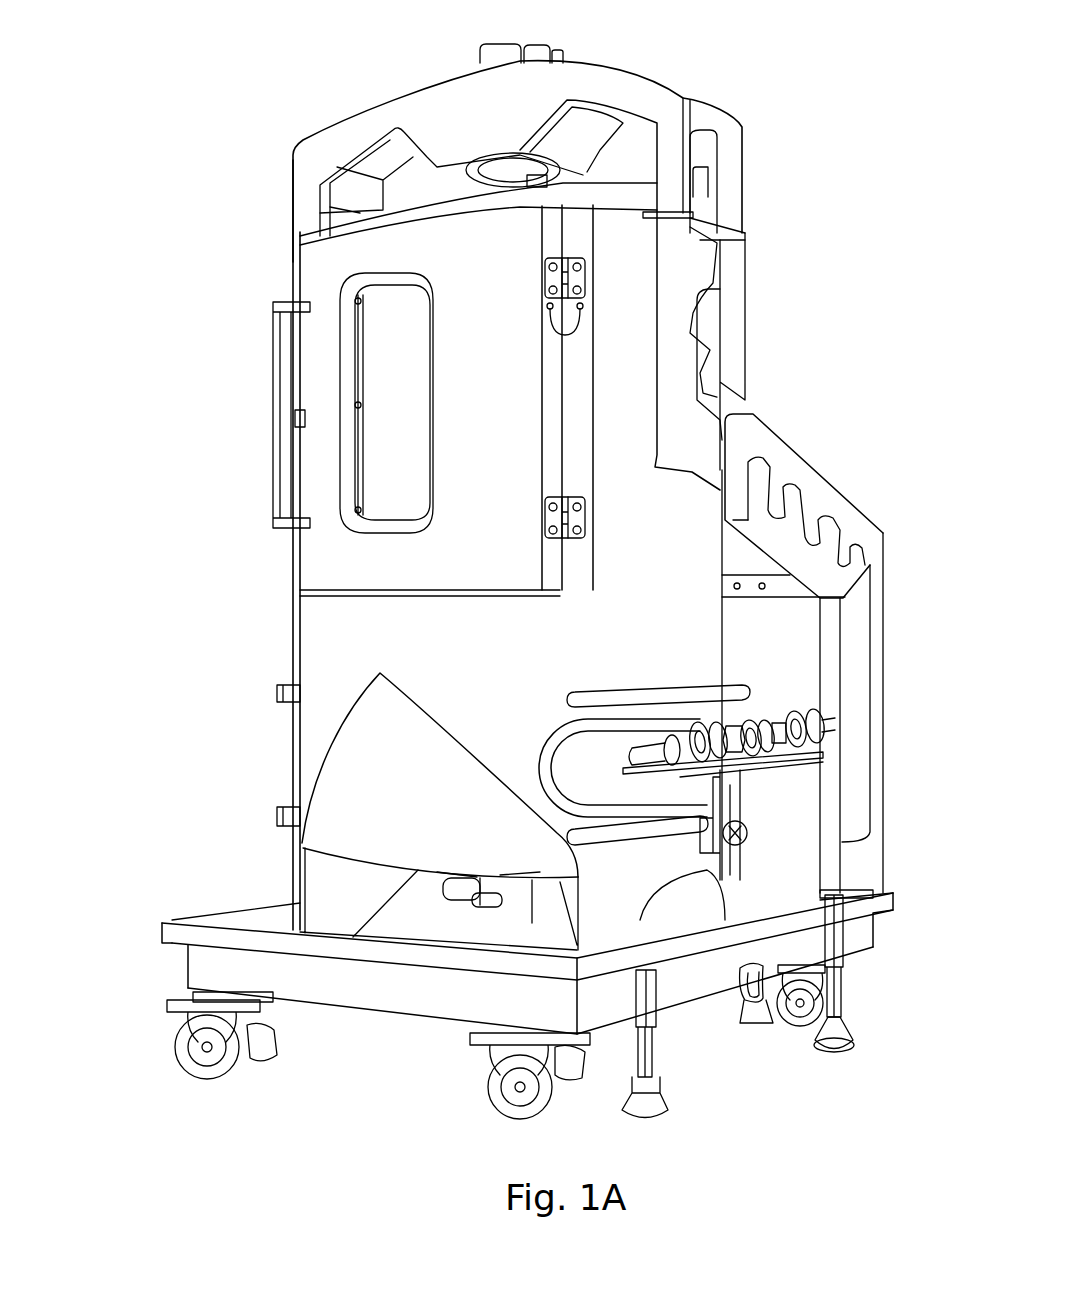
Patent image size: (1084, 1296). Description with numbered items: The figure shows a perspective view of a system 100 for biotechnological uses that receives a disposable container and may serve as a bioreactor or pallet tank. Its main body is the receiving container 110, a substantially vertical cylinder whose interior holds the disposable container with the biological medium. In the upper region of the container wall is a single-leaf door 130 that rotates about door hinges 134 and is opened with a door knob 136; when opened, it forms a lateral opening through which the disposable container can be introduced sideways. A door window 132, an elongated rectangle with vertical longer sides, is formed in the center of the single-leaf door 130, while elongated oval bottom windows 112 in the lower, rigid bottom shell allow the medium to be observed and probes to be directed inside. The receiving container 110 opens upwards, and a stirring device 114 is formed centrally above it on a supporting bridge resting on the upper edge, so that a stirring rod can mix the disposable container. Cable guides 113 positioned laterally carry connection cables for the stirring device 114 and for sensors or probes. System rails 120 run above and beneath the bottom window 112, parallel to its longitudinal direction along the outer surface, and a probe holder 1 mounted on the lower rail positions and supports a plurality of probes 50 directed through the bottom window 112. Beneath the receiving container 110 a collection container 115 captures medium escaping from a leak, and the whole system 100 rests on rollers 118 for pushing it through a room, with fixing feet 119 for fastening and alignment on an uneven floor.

The system 100 is at (886, 281).
The receiving container 110 is at (323, 630).
The bottom windows 112 is at (294, 757).
The cable guides 113 is at (763, 440).
The stirring device 114 is at (508, 50).
The collection container 115 is at (197, 965).
The rollers 118 is at (207, 1062).
The fixing feet 119 is at (650, 1072).
The system rails 120 is at (275, 697).
The single-leaf door 130 is at (313, 563).
The door window 132 is at (415, 420).
The door hinges 134 is at (580, 274).
The door knob 136 is at (280, 362).
The probes 50 is at (700, 727).
The probe holder 1 is at (753, 828).